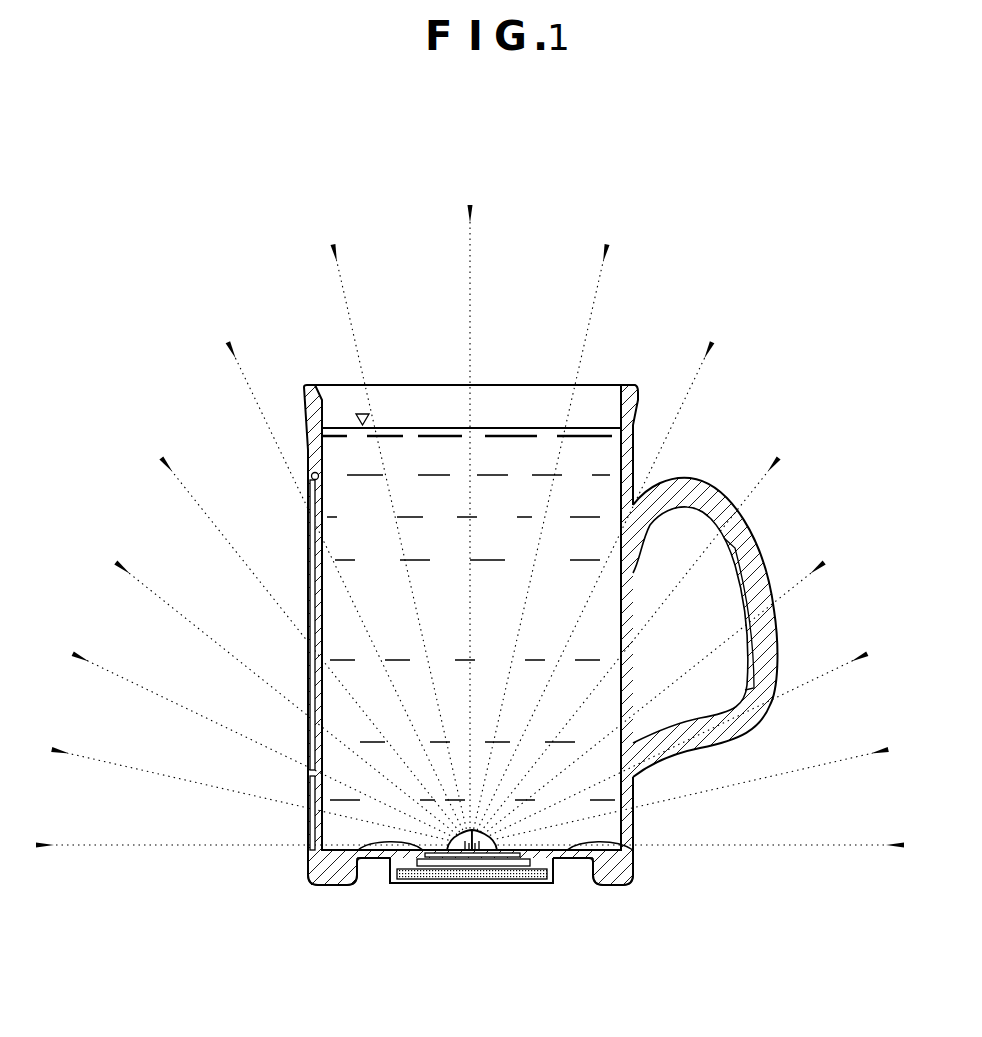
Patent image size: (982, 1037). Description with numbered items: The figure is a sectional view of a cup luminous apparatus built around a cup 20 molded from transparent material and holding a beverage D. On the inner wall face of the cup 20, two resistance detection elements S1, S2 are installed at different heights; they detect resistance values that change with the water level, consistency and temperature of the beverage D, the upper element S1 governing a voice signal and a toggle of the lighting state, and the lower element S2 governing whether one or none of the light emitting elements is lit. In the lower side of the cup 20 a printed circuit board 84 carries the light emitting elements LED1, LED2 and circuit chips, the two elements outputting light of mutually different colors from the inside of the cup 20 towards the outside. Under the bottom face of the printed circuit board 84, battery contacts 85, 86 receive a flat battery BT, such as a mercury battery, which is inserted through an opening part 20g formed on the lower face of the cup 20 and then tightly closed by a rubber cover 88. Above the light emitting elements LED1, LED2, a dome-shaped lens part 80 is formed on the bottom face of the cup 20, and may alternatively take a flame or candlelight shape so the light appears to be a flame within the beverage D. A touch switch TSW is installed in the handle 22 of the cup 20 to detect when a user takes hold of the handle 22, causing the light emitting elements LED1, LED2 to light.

The cup 20 is at (519, 384).
The beverage D is at (422, 428).
The resistance detection element S1 is at (313, 474).
The resistance detection element S2 is at (316, 778).
The handle 22 is at (703, 480).
The touch switch TSW is at (748, 560).
The printed circuit board 84 is at (310, 862).
The lens part 80 is at (635, 873).
The rubber cover 88 is at (407, 882).
The opening part 20g is at (547, 862).
The battery contact 85 is at (508, 870).
The battery contact 86 is at (530, 867).
The battery BT is at (457, 873).
The light emitting element LED1 is at (437, 873).
The light emitting element LED2 is at (497, 862).